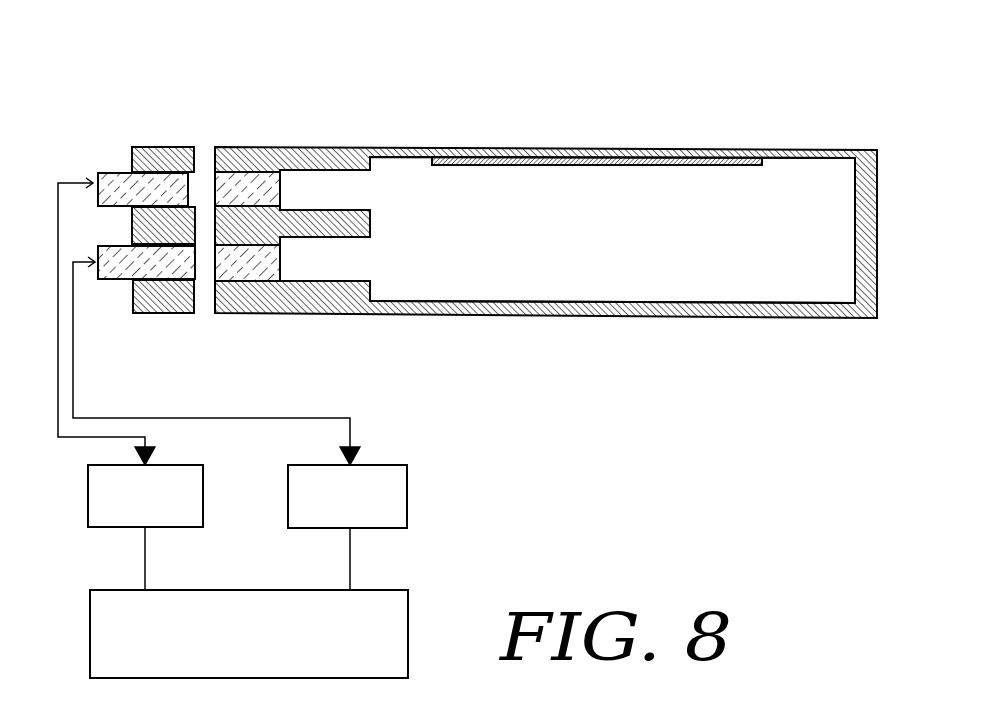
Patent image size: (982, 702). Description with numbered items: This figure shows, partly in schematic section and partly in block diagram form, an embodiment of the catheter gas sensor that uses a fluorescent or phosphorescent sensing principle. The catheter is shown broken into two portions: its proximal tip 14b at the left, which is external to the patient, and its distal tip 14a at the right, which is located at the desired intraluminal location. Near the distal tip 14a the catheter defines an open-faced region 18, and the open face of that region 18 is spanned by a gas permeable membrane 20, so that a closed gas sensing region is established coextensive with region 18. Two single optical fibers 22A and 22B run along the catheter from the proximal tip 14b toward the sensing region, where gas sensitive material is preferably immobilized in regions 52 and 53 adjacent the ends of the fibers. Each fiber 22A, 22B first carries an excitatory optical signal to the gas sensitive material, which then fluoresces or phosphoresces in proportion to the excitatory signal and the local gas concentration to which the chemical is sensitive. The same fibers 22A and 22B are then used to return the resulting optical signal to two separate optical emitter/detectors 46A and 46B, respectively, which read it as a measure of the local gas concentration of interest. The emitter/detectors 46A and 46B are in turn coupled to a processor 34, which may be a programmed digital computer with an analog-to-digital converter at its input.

The proximal tip 14b is at (177, 104).
The distal tip 14a is at (873, 110).
The optical fiber 22A is at (122, 187).
The optical fiber 22B is at (121, 265).
The region 52 is at (317, 187).
The region 53 is at (322, 260).
The gas permeable membrane 20 is at (597, 151).
The open-faced region 18 is at (637, 238).
The optical emitter/detector 46A is at (177, 503).
The optical emitter/detector 46B is at (382, 503).
The processor 34 is at (277, 641).